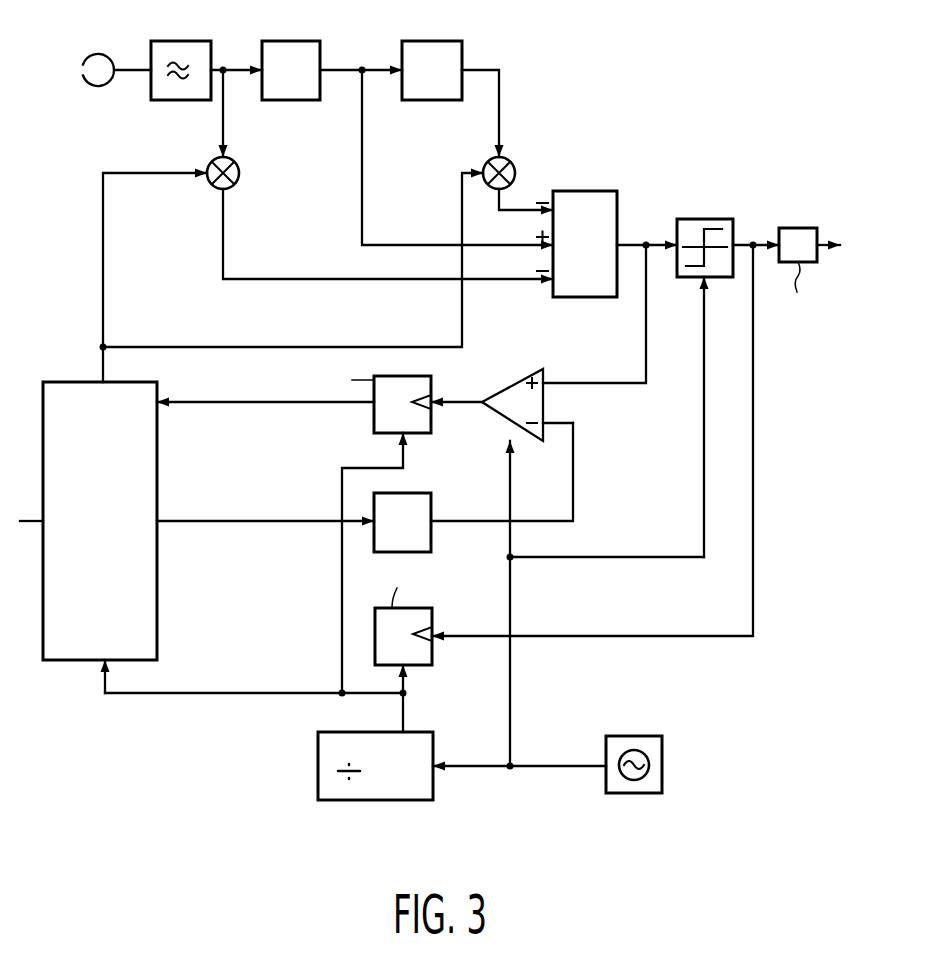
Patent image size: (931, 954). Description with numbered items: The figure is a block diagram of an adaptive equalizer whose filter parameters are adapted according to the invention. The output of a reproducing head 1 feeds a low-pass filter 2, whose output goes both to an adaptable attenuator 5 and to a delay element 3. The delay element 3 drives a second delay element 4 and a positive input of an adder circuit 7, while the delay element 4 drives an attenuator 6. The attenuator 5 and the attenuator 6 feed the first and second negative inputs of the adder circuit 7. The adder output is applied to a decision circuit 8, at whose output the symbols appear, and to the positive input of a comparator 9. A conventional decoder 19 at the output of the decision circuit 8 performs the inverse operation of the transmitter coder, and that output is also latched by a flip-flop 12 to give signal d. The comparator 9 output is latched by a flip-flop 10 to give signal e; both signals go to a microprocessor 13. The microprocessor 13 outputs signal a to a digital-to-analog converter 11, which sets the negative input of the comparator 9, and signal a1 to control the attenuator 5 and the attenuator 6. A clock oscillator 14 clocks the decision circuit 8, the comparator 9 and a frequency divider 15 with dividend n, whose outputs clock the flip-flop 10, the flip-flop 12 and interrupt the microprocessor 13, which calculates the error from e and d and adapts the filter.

The reproducing head 1 is at (107, 52).
The low-pass filter 2 is at (191, 41).
The delay element 3 is at (298, 41).
The delay element 4 is at (444, 38).
The adaptable attenuator 5 is at (237, 170).
The attenuator 6 is at (512, 170).
The adder circuit 7 is at (601, 190).
The decision circuit 8 is at (714, 218).
The comparator 9 is at (532, 373).
The flip-flop 10 is at (432, 391).
The digital-to-analog converter 11 is at (432, 512).
The flip-flop 12 is at (433, 626).
The microprocessor 13 is at (63, 381).
The clock oscillator 14 is at (662, 755).
The frequency divider 15 is at (433, 751).
The decoder 19 is at (798, 228).